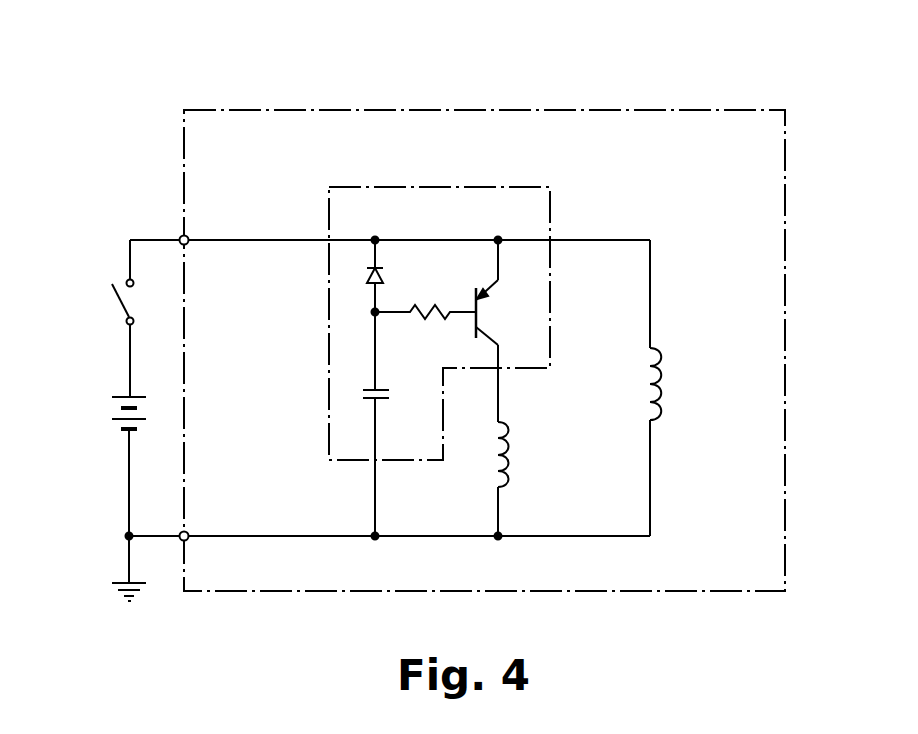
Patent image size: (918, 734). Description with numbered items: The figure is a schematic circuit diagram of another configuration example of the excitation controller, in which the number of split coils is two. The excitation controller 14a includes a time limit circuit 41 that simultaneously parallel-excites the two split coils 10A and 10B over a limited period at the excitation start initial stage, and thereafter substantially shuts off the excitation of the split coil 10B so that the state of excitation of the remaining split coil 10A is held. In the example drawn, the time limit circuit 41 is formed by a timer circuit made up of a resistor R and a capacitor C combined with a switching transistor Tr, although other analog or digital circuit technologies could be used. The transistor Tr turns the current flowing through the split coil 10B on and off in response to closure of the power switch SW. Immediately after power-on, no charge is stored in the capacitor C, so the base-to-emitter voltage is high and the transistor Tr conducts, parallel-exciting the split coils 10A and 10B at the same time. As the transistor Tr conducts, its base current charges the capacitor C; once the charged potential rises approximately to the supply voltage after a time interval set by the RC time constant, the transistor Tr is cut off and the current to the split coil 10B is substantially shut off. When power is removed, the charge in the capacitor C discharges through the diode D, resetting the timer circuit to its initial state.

The excitation controller 14a is at (505, 110).
The time limit circuit 41 is at (551, 210).
The split coil 10A is at (683, 388).
The split coil 10B is at (532, 479).
The power switch SW is at (97, 318).
The diode D is at (389, 278).
The resistor R is at (425, 331).
The capacitor C is at (388, 424).
The switching transistor Tr is at (494, 331).